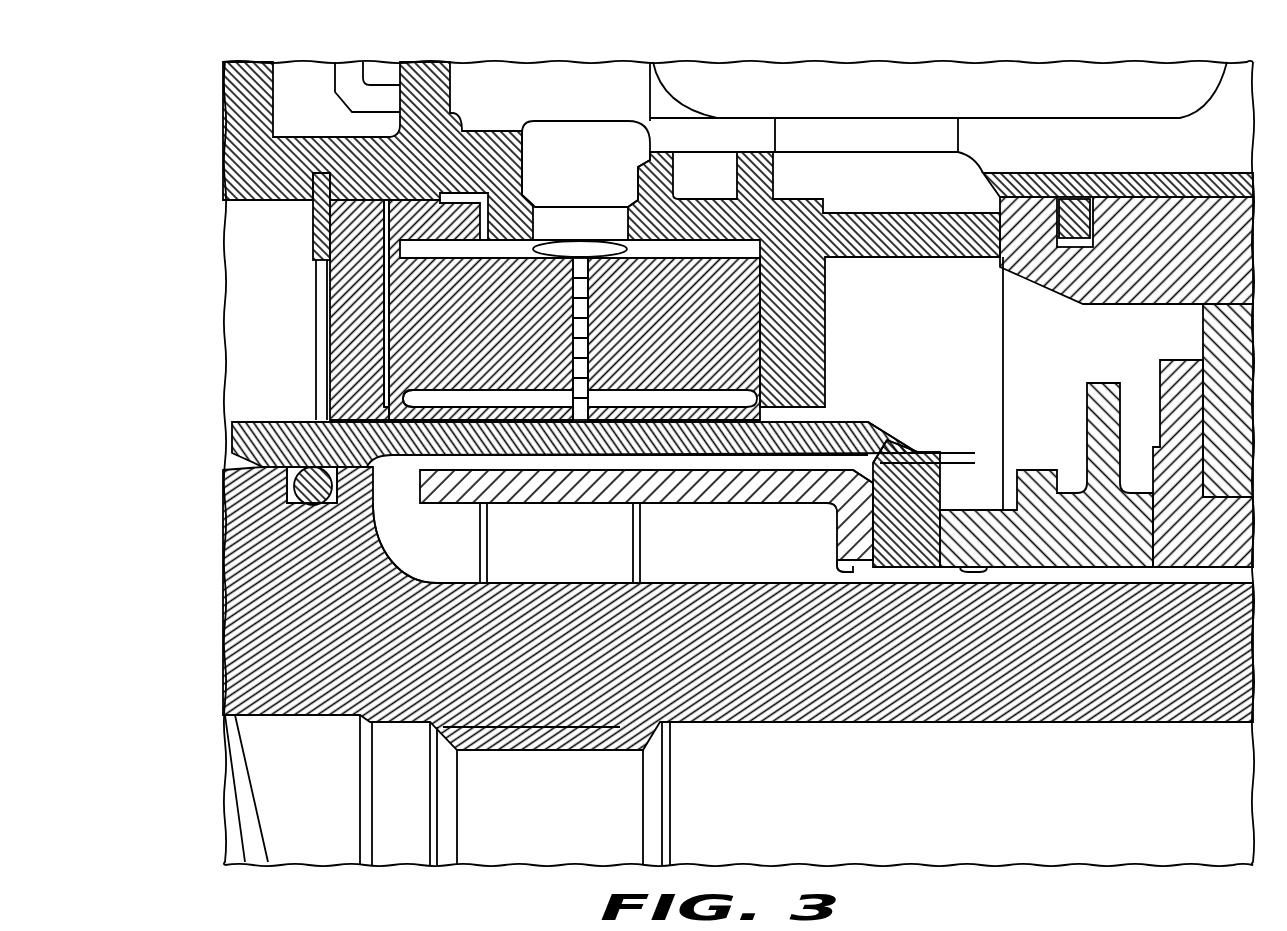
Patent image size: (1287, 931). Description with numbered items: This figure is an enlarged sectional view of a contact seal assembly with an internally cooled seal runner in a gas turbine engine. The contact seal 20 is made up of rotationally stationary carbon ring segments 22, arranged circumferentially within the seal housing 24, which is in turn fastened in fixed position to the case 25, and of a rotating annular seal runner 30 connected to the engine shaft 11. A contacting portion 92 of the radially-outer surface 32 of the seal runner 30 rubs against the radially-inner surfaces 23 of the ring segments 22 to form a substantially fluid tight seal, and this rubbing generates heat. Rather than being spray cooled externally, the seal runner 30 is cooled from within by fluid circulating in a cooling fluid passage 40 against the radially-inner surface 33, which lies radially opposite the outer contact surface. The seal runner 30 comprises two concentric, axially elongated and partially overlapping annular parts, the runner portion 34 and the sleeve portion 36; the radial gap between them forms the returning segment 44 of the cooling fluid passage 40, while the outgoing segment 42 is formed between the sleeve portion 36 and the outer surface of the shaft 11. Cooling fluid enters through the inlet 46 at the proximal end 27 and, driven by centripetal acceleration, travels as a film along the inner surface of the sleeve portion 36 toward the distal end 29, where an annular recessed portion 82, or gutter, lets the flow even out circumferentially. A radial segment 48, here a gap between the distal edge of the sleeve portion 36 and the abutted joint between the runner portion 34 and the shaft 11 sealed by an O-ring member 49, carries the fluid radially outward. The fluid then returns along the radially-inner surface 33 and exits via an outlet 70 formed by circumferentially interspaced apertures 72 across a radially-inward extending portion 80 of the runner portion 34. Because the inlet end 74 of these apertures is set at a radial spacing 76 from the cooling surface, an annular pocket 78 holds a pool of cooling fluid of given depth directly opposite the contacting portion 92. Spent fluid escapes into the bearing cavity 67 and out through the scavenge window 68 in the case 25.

The shaft 11 is at (937, 645).
The contact seal 20 is at (575, 133).
The ring segments 22 is at (470, 310).
The radially-inner surfaces 23 is at (437, 592).
The seal housing 24 is at (340, 293).
The case 25 is at (1027, 159).
The proximal end 27 is at (935, 448).
The distal end 29 is at (337, 440).
The seal runner 30 is at (847, 397).
The radially-outer surface 32 is at (386, 200).
The radially-inner surface 33 is at (570, 505).
The runner portion 34 is at (372, 407).
The sleeve portion 36 is at (787, 484).
The cooling fluid passage 40 is at (718, 556).
The outgoing segment 42 is at (708, 569).
The returning segment 44 is at (688, 463).
The inlet 46 is at (840, 576).
The radial segment 48 is at (363, 497).
The O-ring member 49 is at (290, 486).
The bearing cavity 67 is at (903, 306).
The scavenge window 68 is at (823, 146).
The outlet 70 is at (915, 438).
The outlet apertures 72 is at (897, 425).
The inlet end 74 is at (912, 512).
The radial spacing 76 is at (975, 462).
The annular pocket 78 is at (610, 462).
The radially-inward extending portion 80 is at (920, 482).
The recessed portion 82 is at (513, 506).
The contacting portion 92 is at (600, 270).